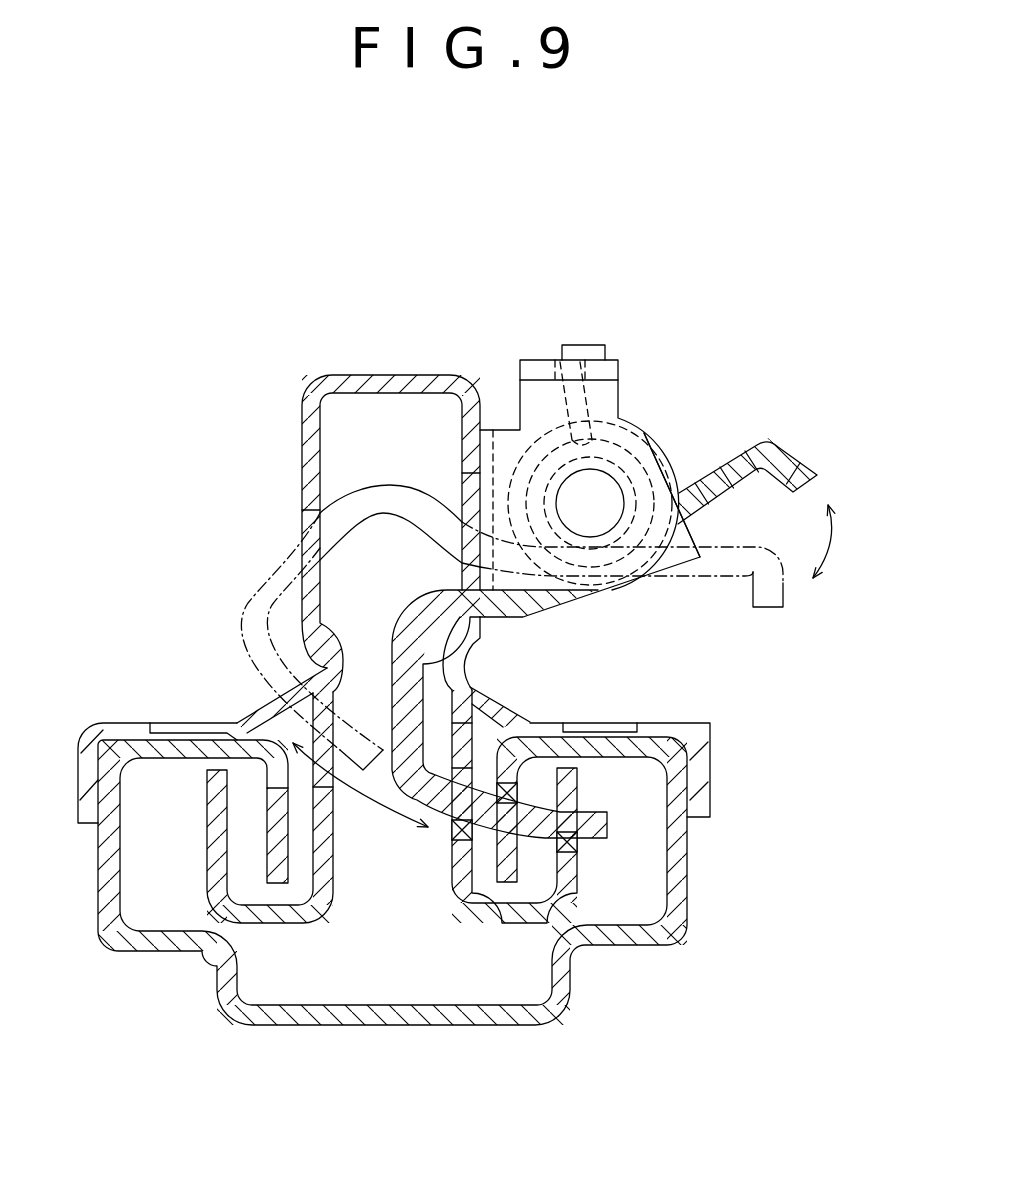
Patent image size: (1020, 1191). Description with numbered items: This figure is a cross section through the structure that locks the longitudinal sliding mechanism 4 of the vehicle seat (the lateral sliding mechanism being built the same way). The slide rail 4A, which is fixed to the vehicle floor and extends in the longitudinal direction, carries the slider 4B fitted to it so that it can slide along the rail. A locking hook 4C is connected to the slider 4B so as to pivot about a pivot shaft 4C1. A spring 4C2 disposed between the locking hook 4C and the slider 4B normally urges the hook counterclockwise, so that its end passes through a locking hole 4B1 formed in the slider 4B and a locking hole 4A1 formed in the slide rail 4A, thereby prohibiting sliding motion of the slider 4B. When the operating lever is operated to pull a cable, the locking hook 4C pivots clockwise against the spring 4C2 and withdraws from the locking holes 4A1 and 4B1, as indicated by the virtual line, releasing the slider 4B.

The longitudinal sliding mechanism 4 is at (700, 252).
The slide rail 4A is at (690, 838).
The locking hole 4A1 is at (525, 798).
The slider 4B is at (300, 428).
The locking hole 4B1 is at (562, 846).
The locking hook 4C is at (395, 645).
The pivot shaft 4C1 is at (591, 503).
The spring 4C2 is at (602, 440).